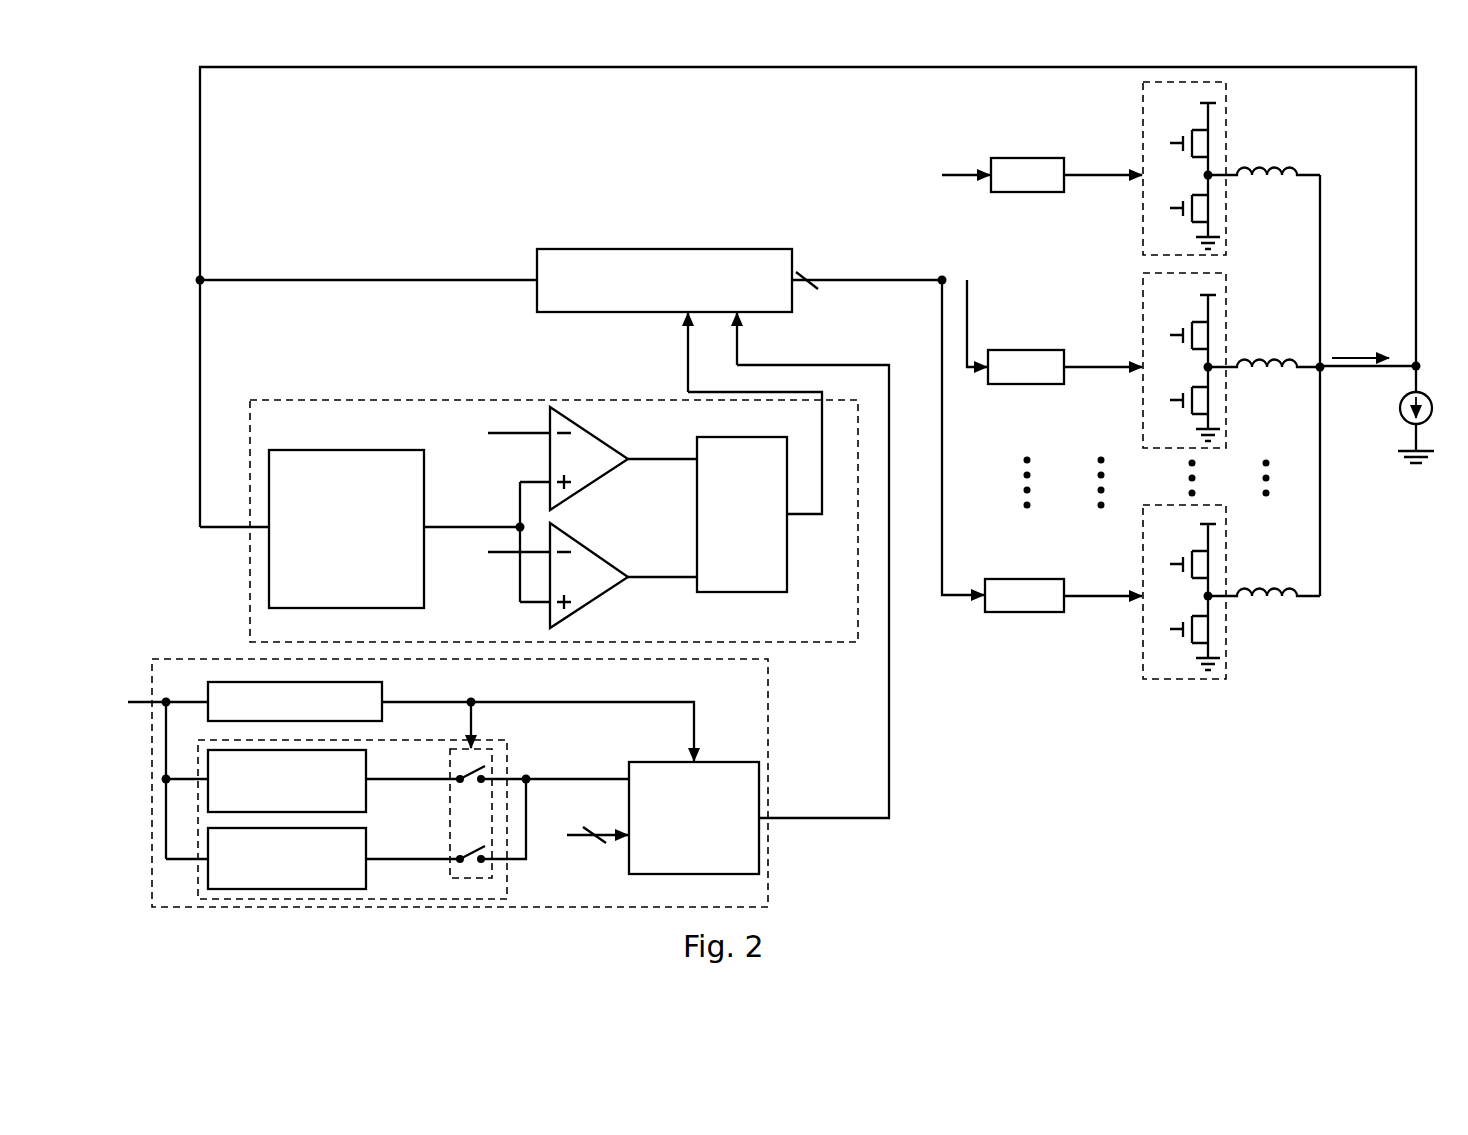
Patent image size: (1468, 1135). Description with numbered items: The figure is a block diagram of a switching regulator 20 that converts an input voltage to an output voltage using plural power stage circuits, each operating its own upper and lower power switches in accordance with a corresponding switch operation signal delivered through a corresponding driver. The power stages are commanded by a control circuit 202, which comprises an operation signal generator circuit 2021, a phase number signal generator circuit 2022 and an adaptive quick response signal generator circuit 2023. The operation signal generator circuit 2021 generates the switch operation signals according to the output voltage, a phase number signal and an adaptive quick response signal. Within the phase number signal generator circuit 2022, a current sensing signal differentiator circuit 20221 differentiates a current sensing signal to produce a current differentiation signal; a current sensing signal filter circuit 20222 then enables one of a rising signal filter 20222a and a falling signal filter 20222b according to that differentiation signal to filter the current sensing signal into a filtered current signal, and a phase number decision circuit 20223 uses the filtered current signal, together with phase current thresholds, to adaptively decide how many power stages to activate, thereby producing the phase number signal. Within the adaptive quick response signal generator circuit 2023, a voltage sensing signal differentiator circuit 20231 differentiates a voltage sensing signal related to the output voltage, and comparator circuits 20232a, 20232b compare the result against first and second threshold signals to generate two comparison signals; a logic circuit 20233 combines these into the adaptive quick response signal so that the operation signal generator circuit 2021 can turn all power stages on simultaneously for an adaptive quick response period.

The switching regulator 20 is at (169, 130).
The control circuit 202 is at (682, 103).
The operation signal generator circuit 2021 is at (742, 533).
The phase number signal generator circuit 2022 is at (237, 659).
The adaptive quick response (AQR) signal generator circuit 2023 is at (563, 399).
The voltage sensing signal differentiator circuit 20231 is at (346, 529).
The comparator circuit 20232a is at (606, 436).
The comparator circuit 20232b is at (590, 546).
The logic circuit 20233 is at (742, 514).
The current sensing signal differentiator circuit 20221 is at (295, 701).
The current sensing signal filter circuit 20222 is at (216, 906).
The rising signal filter 20222a is at (287, 781).
The falling signal filter 20222b is at (287, 858).
The phase number decision circuit 20223 is at (694, 818).